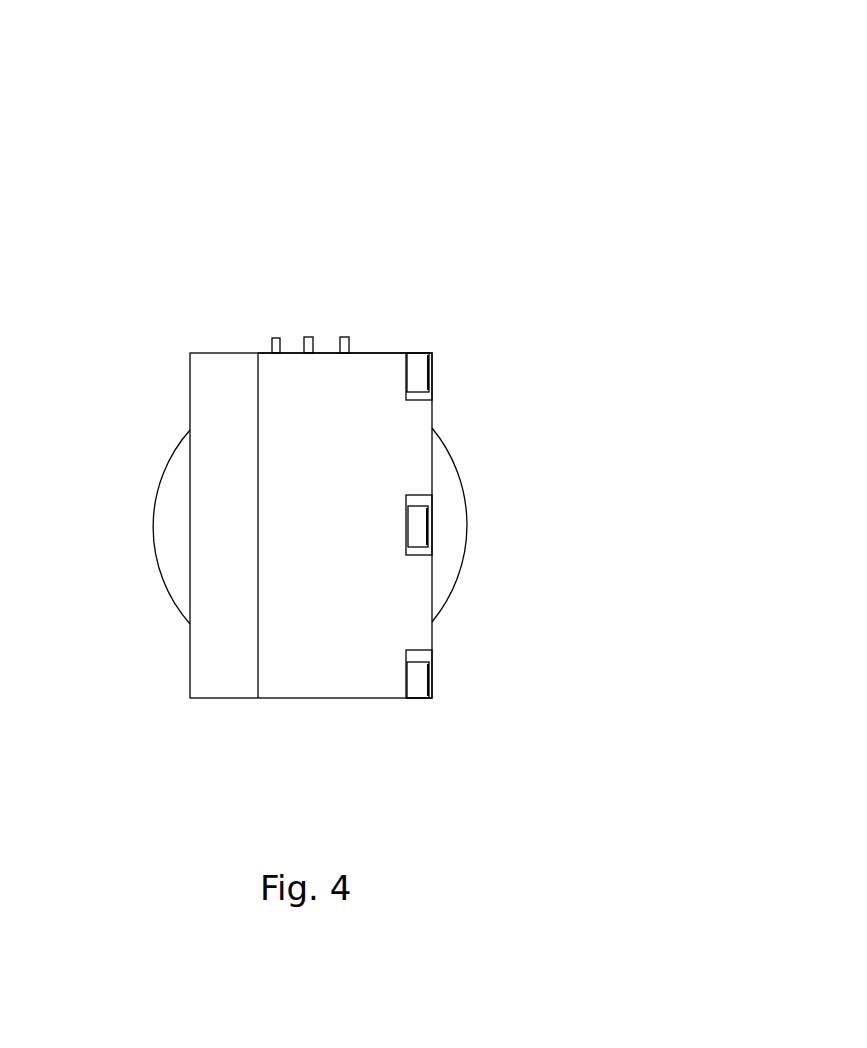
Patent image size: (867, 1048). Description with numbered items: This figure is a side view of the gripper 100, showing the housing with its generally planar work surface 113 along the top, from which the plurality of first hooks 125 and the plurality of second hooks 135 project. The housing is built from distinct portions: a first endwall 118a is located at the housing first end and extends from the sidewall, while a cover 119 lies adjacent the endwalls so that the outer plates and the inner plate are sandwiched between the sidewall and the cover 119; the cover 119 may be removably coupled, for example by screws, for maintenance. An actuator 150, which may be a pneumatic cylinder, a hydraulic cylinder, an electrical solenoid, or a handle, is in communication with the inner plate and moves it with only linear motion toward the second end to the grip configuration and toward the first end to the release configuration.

The gripper 100 is at (478, 128).
The work surface 113 is at (390, 353).
The first endwall 118a is at (398, 427).
The cover 119 is at (212, 666).
The first hooks 125 is at (270, 343).
The second hooks 135 is at (308, 336).
The actuator 150 is at (157, 467).